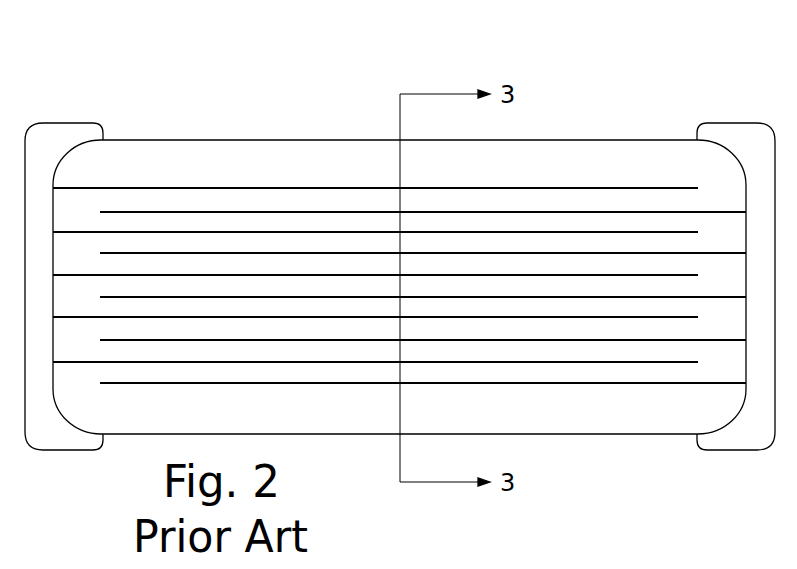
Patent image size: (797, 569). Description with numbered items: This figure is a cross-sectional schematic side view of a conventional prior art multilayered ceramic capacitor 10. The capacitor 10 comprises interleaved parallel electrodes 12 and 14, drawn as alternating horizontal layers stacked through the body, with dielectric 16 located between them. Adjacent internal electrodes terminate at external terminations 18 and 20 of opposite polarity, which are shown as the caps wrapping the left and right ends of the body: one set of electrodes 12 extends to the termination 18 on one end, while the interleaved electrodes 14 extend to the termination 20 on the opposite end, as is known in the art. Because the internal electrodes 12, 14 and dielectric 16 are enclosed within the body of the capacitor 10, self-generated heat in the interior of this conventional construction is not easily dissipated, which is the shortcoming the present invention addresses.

The multilayered ceramic capacitor 10 is at (400, 278).
The electrode 12 is at (297, 273).
The electrode 14 is at (548, 213).
The dielectric 16 is at (88, 255).
The external termination 18 is at (45, 429).
The external termination 20 is at (758, 428).